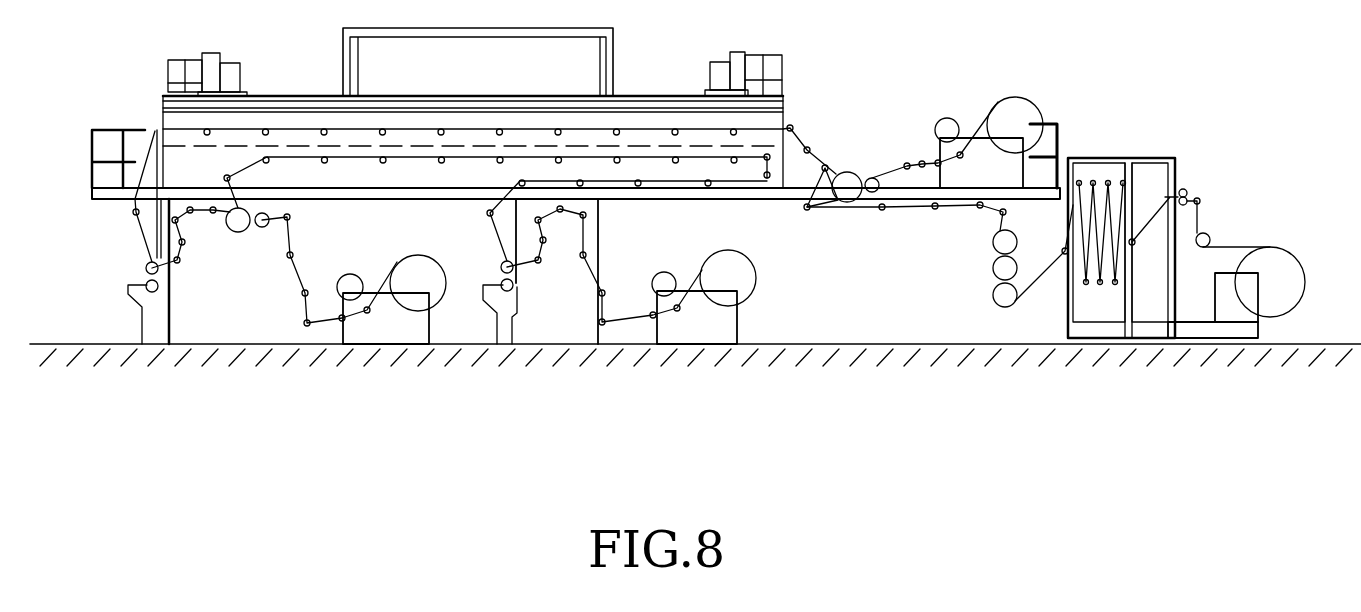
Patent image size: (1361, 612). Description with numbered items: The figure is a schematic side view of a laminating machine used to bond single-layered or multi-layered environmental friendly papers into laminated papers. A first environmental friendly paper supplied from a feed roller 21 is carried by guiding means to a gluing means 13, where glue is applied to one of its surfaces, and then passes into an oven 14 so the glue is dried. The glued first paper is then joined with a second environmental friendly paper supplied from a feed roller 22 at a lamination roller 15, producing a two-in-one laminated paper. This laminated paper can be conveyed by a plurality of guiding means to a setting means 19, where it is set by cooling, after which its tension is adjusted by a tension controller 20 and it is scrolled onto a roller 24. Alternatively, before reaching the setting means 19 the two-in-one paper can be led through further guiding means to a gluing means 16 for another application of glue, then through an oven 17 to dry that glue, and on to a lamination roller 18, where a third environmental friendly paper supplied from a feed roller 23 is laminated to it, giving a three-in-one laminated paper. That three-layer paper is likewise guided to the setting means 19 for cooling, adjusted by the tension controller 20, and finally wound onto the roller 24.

The gluing means 13 is at (512, 320).
The oven 14 is at (650, 168).
The lamination roller 15 is at (238, 232).
The gluing means 16 is at (152, 293).
The oven 17 is at (298, 117).
The lamination roller 18 is at (848, 172).
The setting means 19 is at (993, 308).
The tension controller 20 is at (1121, 157).
The feed roller 21 is at (740, 250).
The feed roller 22 is at (392, 260).
The feed roller 23 is at (1024, 108).
The roller 24 is at (1290, 258).